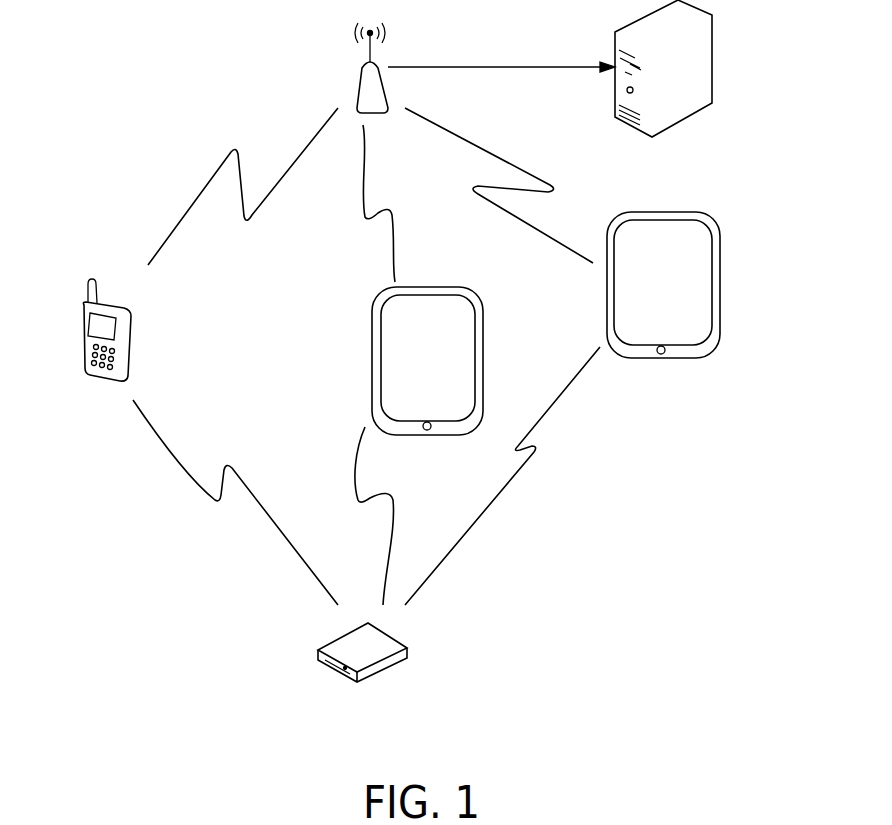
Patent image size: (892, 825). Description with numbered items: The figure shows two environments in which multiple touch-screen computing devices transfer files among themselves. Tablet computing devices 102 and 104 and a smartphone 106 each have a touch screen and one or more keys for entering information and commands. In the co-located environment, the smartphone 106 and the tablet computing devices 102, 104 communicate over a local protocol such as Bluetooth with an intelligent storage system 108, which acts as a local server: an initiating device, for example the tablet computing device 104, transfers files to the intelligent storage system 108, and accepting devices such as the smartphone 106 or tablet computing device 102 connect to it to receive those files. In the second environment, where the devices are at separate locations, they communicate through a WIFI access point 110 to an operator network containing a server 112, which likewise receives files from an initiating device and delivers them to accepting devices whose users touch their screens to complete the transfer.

The tablet computing device 102 is at (720, 285).
The tablet computing device 104 is at (484, 360).
The smartphone 106 is at (137, 340).
The intelligent storage system 108 is at (407, 655).
The WIFI access point 110 is at (357, 87).
The server 112 is at (713, 66).